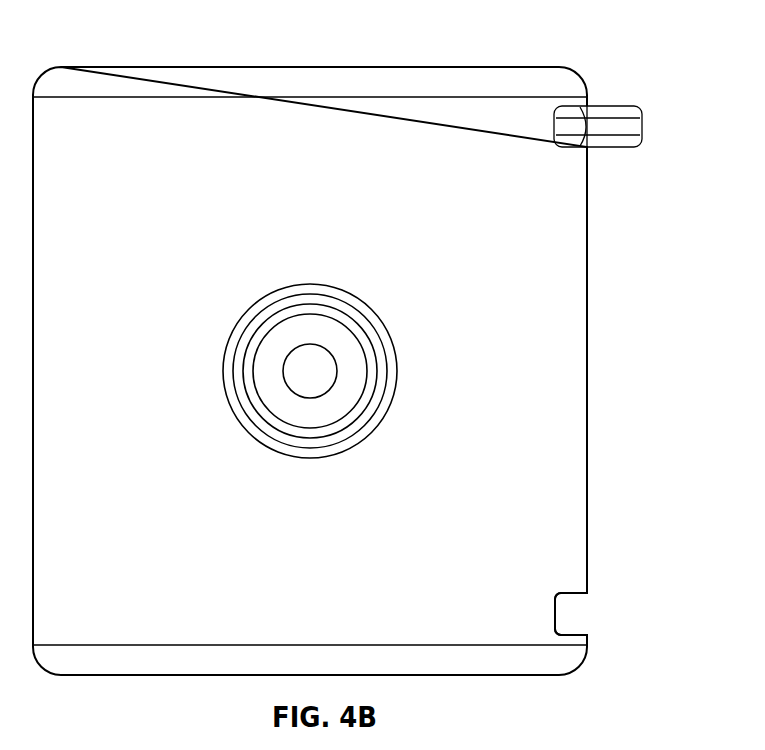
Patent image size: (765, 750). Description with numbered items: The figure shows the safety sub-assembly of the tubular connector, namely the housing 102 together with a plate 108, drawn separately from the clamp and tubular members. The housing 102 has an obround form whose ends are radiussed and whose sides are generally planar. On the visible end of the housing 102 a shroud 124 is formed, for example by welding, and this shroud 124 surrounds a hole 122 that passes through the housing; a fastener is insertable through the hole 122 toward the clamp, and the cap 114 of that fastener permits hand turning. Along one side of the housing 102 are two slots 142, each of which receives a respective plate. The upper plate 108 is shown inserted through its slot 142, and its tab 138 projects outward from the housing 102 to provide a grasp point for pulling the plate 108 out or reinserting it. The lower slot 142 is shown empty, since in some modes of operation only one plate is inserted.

The housing 102 is at (420, 63).
The plate 108 is at (609, 98).
The tab 138 is at (642, 142).
The slot 142 is at (565, 148).
The shroud 124 is at (378, 365).
The cap 114 is at (338, 402).
The hole 122 is at (308, 358).